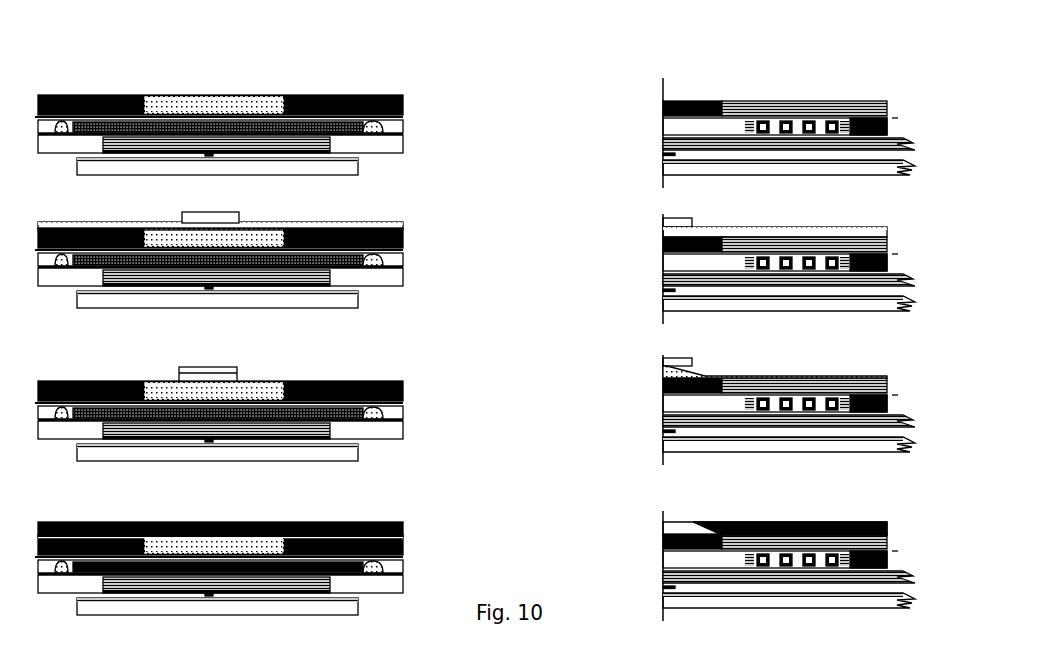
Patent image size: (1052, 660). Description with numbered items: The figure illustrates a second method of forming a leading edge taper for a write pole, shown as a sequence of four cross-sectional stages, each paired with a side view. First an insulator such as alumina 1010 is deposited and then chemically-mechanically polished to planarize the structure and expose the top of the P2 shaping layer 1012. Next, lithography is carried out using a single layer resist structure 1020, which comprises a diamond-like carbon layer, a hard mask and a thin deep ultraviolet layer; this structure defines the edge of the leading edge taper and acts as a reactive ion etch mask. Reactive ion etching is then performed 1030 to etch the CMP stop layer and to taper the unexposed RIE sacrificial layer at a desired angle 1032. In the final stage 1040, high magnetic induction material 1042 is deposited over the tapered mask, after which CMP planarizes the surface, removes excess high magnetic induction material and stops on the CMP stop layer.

The alumina 1010 is at (115, 107).
The P2 shaping layer 1012 is at (240, 97).
The single layer resist structure 1020 is at (217, 213).
The RIE step 1030 is at (107, 355).
The desired angle 1032 is at (703, 372).
The deposition and CMP step 1040 is at (98, 503).
The high magnetic induction material 1042 is at (462, 499).